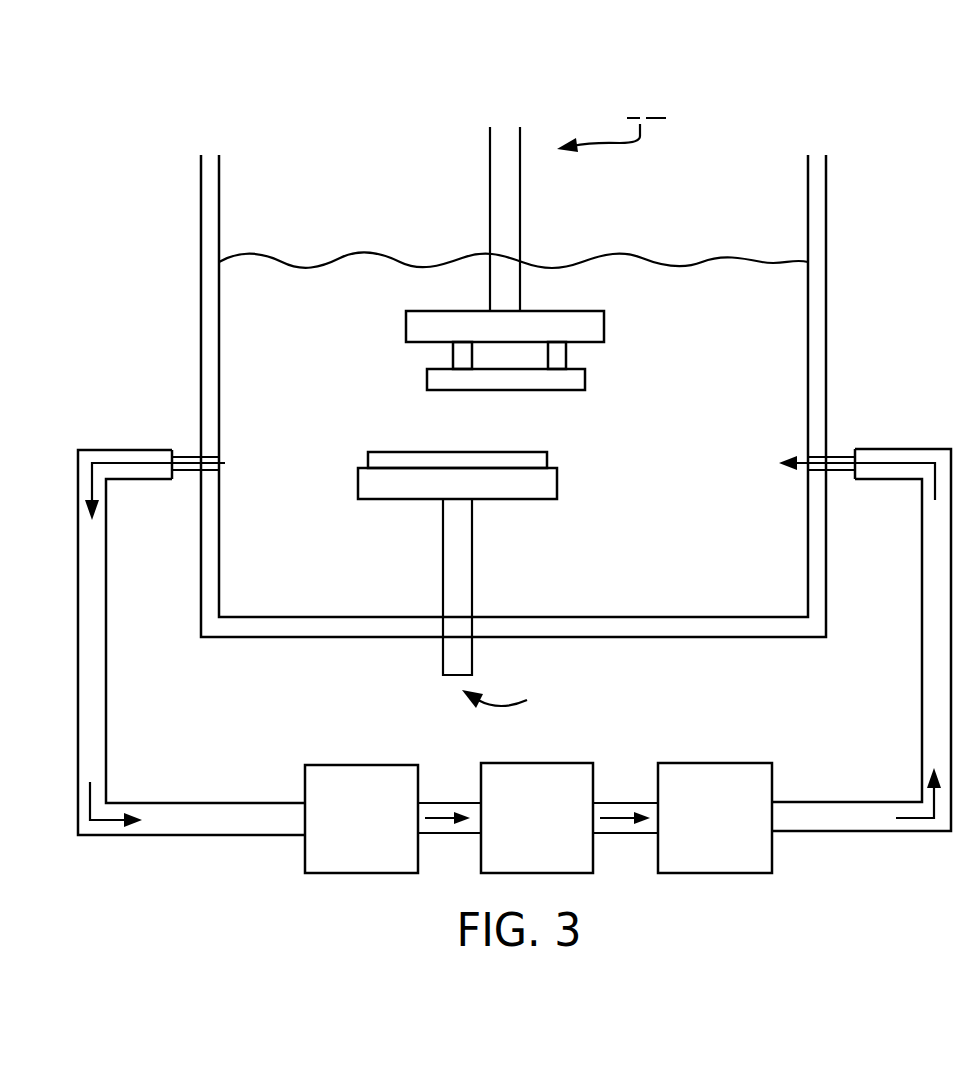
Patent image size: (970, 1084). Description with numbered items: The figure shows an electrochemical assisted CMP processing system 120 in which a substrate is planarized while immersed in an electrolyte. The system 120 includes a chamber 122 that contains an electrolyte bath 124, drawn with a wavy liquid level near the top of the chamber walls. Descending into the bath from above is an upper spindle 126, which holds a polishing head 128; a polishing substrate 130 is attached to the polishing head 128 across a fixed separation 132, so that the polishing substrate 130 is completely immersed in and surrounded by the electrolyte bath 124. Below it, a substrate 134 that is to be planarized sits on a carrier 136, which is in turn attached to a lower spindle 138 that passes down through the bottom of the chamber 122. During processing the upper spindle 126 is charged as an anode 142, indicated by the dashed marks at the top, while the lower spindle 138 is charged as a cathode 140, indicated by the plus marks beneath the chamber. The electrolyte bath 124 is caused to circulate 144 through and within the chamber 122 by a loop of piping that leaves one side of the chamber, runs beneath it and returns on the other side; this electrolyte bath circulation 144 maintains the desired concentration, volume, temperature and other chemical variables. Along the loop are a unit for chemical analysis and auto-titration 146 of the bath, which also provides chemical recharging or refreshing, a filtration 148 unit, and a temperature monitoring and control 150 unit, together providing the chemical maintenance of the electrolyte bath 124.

The electrochemical assisted CMP processing system 120 is at (80, 108).
The chamber 122 is at (201, 190).
The electrolyte bath 124 is at (283, 272).
The upper spindle 126 is at (497, 210).
The polishing head 128 is at (604, 322).
The polishing substrate 130 is at (583, 386).
The fixed separation 132 is at (582, 352).
The substrate 134 is at (383, 452).
The carrier 136 is at (358, 487).
The lower spindle 138 is at (443, 548).
The cathode 140 is at (565, 676).
The anode 142 is at (633, 108).
The electrolyte bath circulation 144 is at (78, 620).
The chemical analysis and auto-titration 146 is at (365, 765).
The filtration 148 is at (580, 763).
The temperature monitoring and control 150 is at (765, 763).